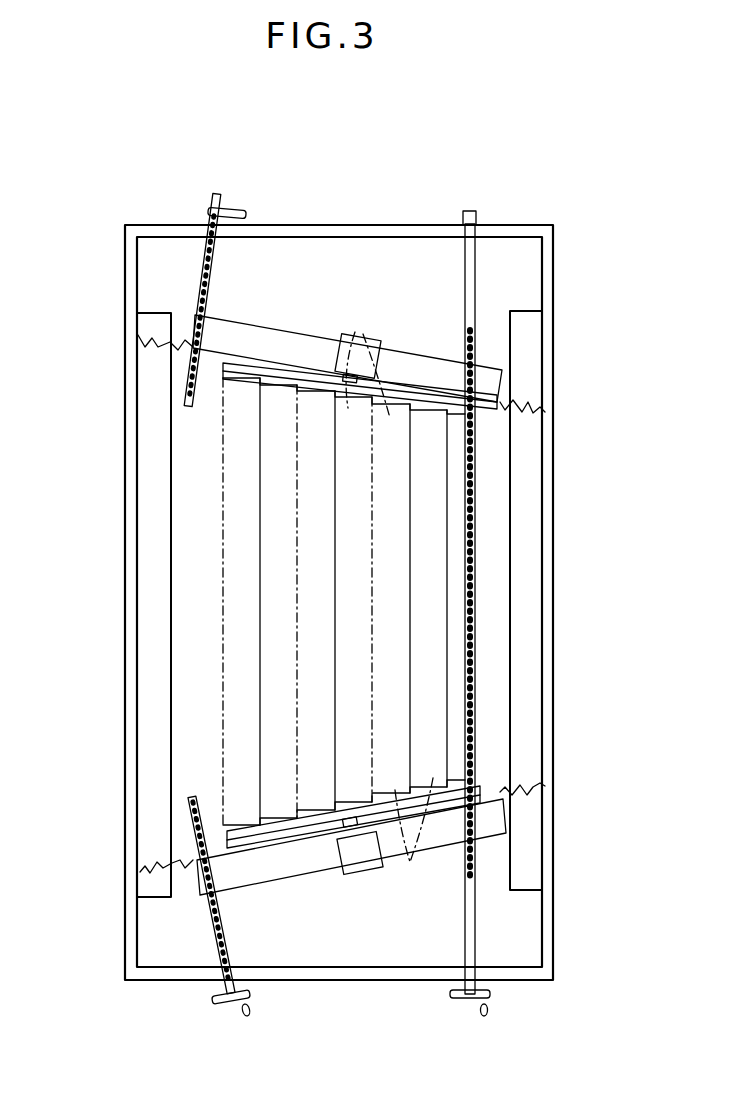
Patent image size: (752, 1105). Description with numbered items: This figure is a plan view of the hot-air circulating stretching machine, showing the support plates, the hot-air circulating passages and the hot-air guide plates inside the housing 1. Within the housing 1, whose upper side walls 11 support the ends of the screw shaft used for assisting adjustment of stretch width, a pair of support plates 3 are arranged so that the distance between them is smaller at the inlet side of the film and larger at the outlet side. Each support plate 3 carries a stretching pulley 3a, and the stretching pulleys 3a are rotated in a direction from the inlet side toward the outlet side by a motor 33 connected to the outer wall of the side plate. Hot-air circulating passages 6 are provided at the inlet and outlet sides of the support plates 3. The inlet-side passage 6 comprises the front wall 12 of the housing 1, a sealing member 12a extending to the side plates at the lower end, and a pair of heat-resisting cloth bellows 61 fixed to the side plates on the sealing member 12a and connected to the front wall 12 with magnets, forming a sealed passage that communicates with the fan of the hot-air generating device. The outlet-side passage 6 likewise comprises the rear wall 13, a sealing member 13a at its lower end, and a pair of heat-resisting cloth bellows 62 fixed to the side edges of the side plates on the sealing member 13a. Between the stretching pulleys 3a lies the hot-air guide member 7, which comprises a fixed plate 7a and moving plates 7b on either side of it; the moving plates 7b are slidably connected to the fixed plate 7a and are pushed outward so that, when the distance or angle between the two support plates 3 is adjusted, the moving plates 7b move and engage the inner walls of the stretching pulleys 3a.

The housing 1 is at (503, 217).
The upper side wall 11 is at (355, 225).
The front wall 12 is at (548, 451).
The sealing member 12a is at (531, 494).
The rear wall 13 is at (131, 443).
The sealing member 13a is at (151, 605).
The hot-air circulating passage 6 is at (178, 525).
The heat-resisting cloth bellows 61 is at (547, 413).
The heat-resisting cloth bellows 62 is at (138, 337).
The support plate 3 is at (312, 348).
The stretching pulley 3a is at (243, 371).
The motor 33 is at (352, 333).
The hot-air guide member 7 is at (220, 639).
The fixed plate 7a is at (238, 480).
The moving plate 7b is at (363, 355).